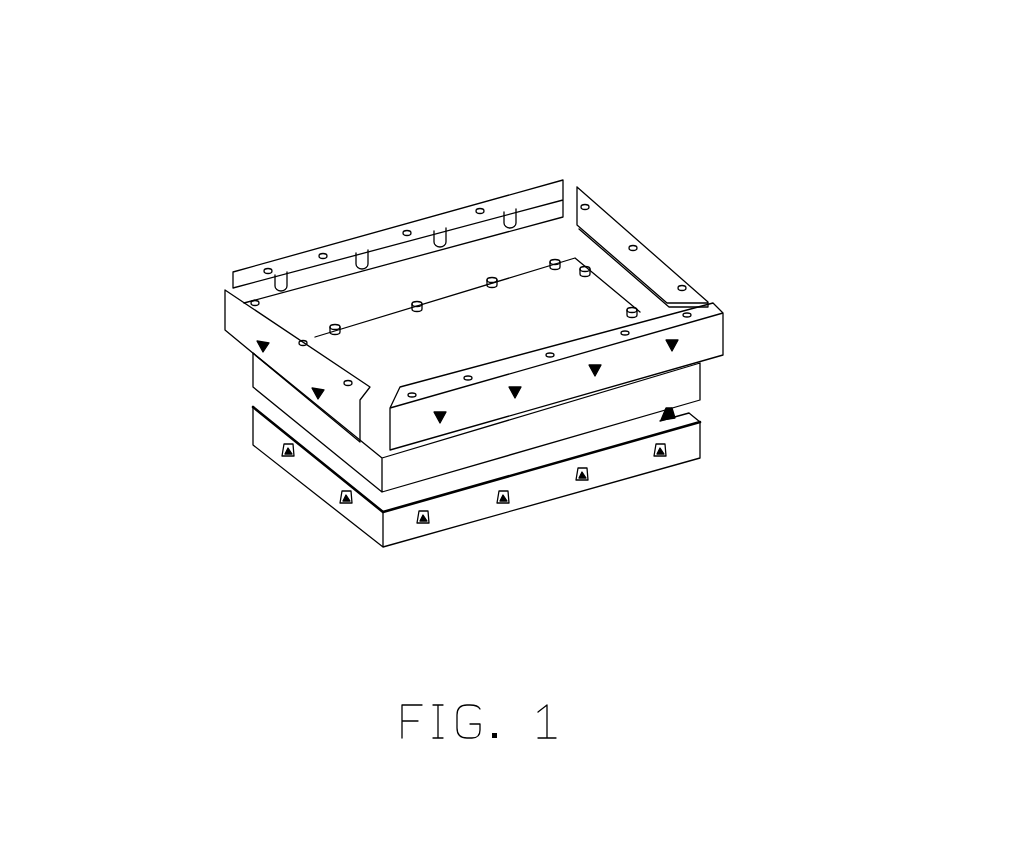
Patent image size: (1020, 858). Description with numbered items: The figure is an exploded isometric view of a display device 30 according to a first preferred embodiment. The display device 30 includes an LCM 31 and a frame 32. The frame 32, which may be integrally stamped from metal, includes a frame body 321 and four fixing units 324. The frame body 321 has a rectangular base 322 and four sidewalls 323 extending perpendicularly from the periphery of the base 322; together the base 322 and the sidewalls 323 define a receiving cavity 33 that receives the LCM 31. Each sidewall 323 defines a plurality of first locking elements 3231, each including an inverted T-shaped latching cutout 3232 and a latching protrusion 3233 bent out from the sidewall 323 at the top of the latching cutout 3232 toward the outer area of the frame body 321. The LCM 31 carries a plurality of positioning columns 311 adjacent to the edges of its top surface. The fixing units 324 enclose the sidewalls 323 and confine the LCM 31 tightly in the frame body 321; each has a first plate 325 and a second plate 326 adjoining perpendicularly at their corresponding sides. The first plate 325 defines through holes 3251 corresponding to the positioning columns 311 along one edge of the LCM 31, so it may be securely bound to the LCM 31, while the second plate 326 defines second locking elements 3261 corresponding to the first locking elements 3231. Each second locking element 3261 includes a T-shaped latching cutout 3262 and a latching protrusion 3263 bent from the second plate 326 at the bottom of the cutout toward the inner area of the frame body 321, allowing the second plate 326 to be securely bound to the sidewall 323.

The display device 30 is at (476, 311).
The LCM 31 is at (280, 390).
The positioning columns 311 is at (555, 262).
The frame 32 is at (880, 470).
The frame body 321 is at (798, 490).
The base 322 is at (688, 413).
The sidewalls 323 is at (637, 462).
The first locking elements 3231 is at (602, 562).
The latching cutout 3232 is at (502, 503).
The latching protrusion 3233 is at (512, 494).
The fixing units 324 is at (806, 352).
The first plate 325 is at (705, 312).
The through holes 3251 is at (586, 204).
The second plate 326 is at (713, 335).
The second locking elements 3261 is at (115, 348).
The latching cutout 3262 is at (253, 353).
The latching protrusion 3263 is at (232, 274).
The receiving cavity 33 is at (385, 505).